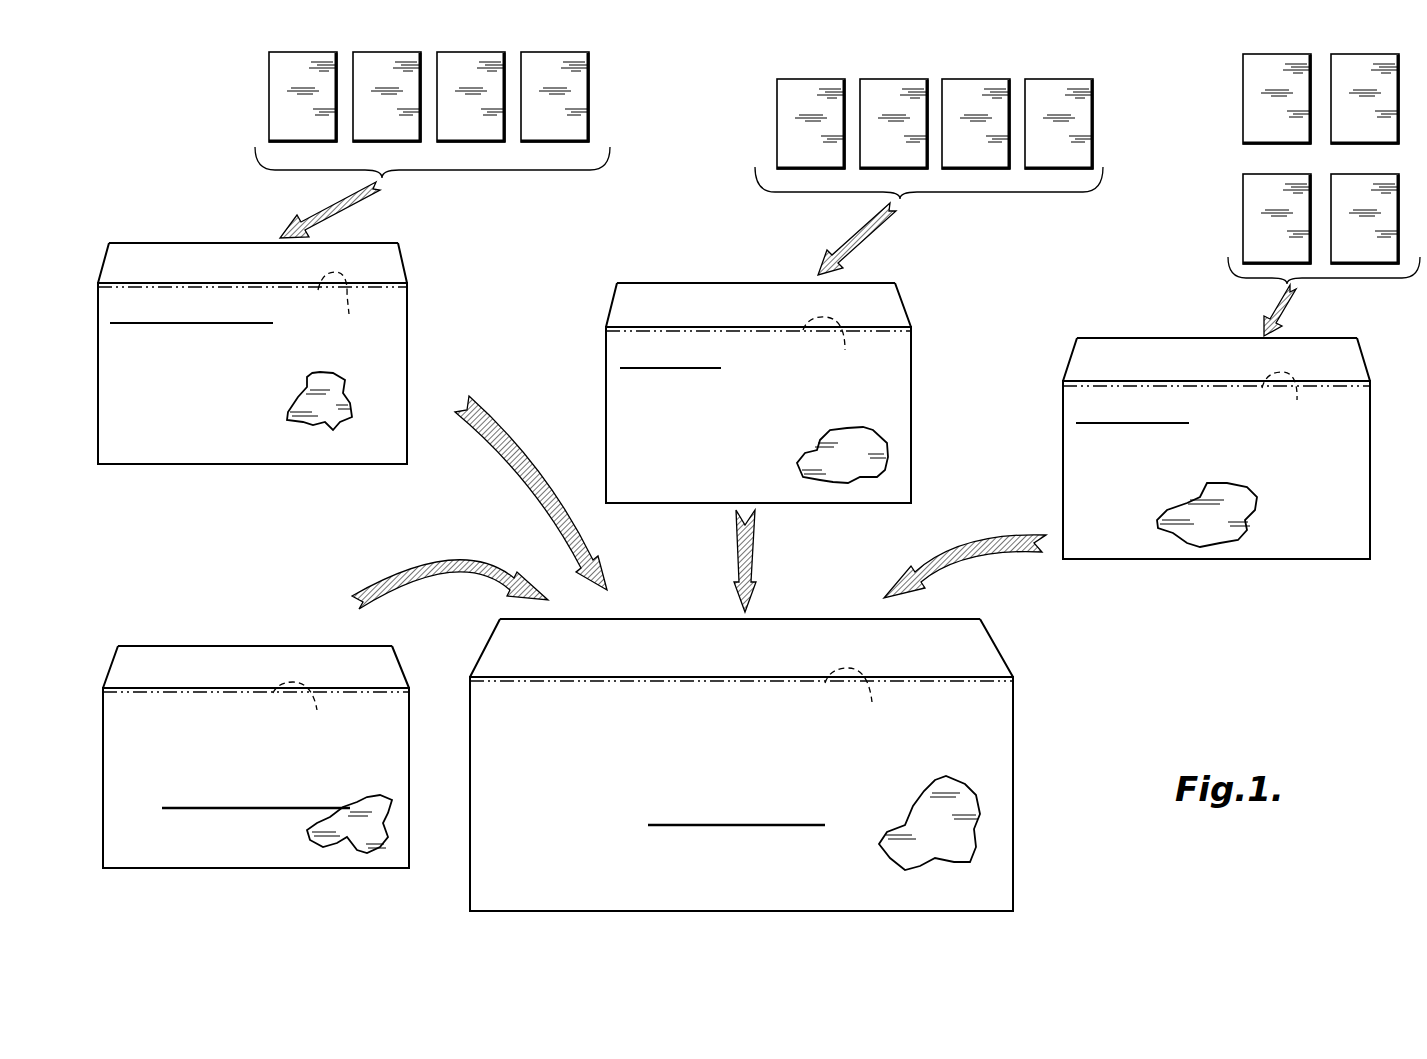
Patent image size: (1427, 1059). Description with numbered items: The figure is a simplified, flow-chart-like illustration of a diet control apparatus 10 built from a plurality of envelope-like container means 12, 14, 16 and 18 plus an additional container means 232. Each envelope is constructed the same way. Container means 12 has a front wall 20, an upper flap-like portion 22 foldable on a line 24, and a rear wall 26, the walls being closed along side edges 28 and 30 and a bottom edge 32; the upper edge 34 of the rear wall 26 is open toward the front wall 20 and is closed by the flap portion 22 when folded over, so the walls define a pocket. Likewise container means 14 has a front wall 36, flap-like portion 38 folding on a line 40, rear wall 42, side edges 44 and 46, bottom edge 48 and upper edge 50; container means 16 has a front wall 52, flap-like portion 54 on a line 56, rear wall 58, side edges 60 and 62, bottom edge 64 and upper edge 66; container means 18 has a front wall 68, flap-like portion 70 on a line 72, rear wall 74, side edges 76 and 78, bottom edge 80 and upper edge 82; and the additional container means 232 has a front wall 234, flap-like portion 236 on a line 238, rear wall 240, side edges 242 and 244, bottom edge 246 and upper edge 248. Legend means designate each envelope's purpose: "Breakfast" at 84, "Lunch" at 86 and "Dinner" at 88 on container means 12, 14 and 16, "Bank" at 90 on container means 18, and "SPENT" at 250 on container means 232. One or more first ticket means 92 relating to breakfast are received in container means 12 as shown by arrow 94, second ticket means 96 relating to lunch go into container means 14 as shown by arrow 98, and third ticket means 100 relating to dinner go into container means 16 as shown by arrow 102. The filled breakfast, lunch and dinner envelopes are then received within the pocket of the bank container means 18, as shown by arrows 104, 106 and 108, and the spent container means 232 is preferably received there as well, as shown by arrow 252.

The diet control apparatus 10 is at (1176, 675).
The container means 12 is at (257, 360).
The container means 14 is at (767, 395).
The container means 16 is at (1220, 453).
The container means 18 is at (750, 760).
The front wall 20 is at (220, 447).
The flap-like portion 22 is at (388, 264).
The line 24 is at (204, 280).
The rear wall 26 is at (325, 416).
The side edge 28 is at (98, 412).
The side edge 30 is at (407, 370).
The bottom edge 32 is at (362, 467).
The upper edge 34 is at (341, 304).
The front wall 36 is at (693, 478).
The flap-like portion 38 is at (895, 308).
The line 40 is at (757, 326).
The rear wall 42 is at (866, 452).
The side edge 44 is at (606, 430).
The side edge 46 is at (912, 470).
The bottom edge 48 is at (818, 505).
The upper edge 50 is at (836, 348).
The front wall 52 is at (1112, 537).
The flap-like portion 54 is at (1357, 362).
The line 56 is at (1193, 381).
The rear wall 58 is at (1213, 532).
The side edge 60 is at (1063, 483).
The side edge 62 is at (1372, 535).
The bottom edge 64 is at (1225, 562).
The upper edge 66 is at (1289, 401).
The front wall 68 is at (631, 890).
The flap-like portion 70 is at (984, 650).
The line 72 is at (616, 676).
The rear wall 74 is at (934, 840).
The side edge 76 is at (470, 872).
The side edge 78 is at (1013, 726).
The bottom edge 80 is at (814, 913).
The upper edge 82 is at (860, 703).
The legend means 84 is at (140, 327).
The legend means 86 is at (647, 372).
The legend means 88 is at (1092, 430).
The legend means 90 is at (726, 829).
The first ticket means 92 is at (245, 96).
The arrow 94 is at (370, 200).
The second ticket means 96 is at (765, 122).
The arrow 98 is at (903, 220).
The third ticket means 100 is at (1233, 168).
The arrow 102 is at (1291, 298).
The arrow 104 is at (516, 471).
The arrow 106 is at (753, 555).
The arrow 108 is at (965, 567).
The additional container means 232 is at (253, 762).
The front wall 234 is at (216, 847).
The flap-like portion 236 is at (122, 667).
The line 238 is at (176, 687).
The rear wall 240 is at (350, 838).
The side edge 242 is at (103, 828).
The side edge 244 is at (410, 783).
The bottom edge 246 is at (260, 868).
The upper edge 248 is at (311, 712).
The legend 250 is at (168, 763).
The arrow 252 is at (485, 577).